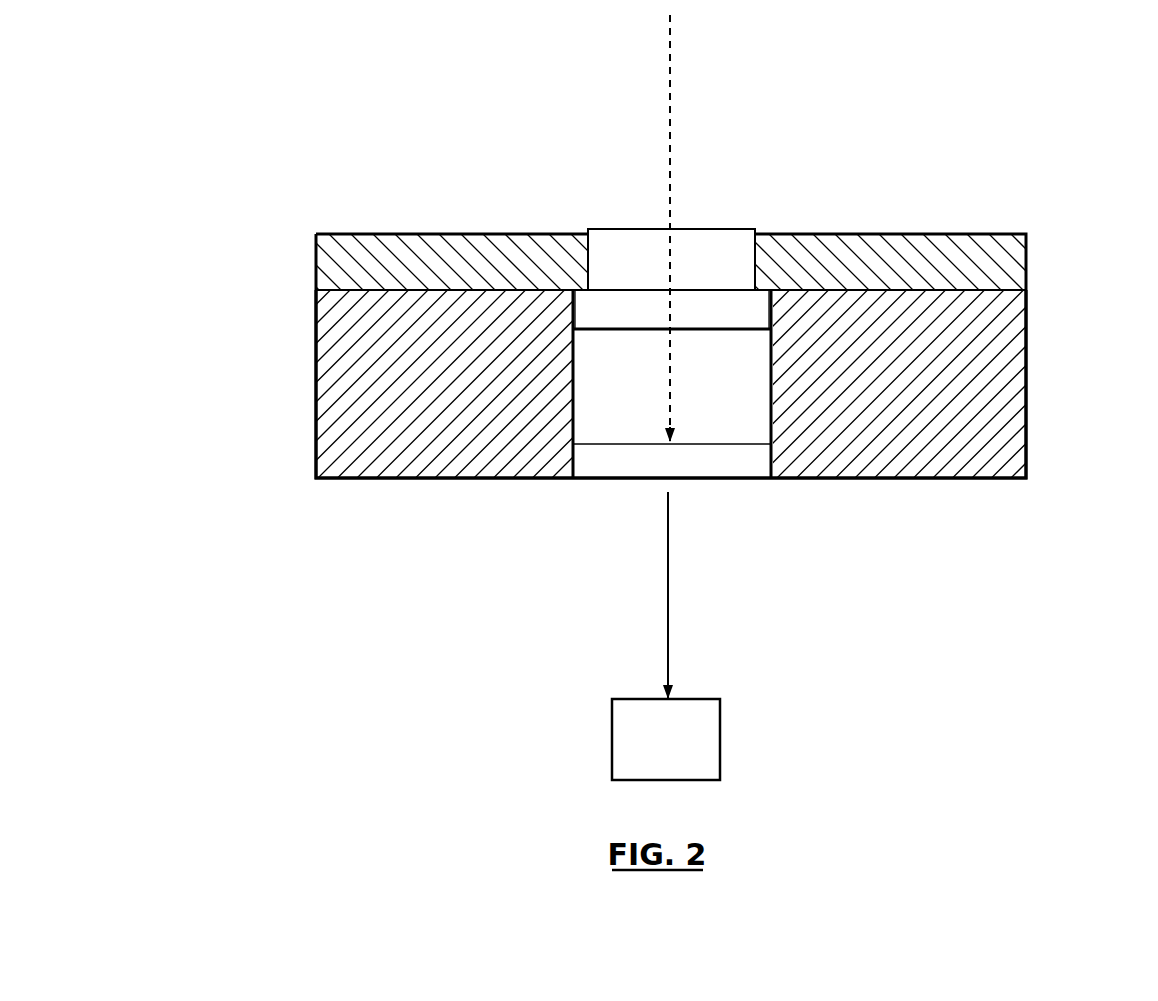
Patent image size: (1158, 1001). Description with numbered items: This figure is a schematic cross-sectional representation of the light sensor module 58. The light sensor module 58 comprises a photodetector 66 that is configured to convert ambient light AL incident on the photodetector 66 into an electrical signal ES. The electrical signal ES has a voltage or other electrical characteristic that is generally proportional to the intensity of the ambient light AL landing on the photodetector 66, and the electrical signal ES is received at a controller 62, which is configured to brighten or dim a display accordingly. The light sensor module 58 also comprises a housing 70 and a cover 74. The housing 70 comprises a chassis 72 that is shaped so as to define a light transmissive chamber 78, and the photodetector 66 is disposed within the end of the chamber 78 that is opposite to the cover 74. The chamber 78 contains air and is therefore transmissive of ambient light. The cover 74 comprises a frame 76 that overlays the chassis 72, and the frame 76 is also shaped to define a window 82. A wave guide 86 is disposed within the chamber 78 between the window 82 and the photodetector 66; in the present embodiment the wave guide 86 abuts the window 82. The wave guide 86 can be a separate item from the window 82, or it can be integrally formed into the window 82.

The light sensor module 58 is at (311, 513).
The controller 62 is at (652, 751).
The photodetector 66 is at (654, 471).
The housing 70 is at (313, 374).
The chassis 72 is at (338, 337).
The cover 74 is at (313, 250).
The frame 76 is at (333, 270).
The light transmissive chamber 78 is at (619, 417).
The window 82 is at (622, 255).
The wave guide 86 is at (717, 305).
The ambient light AL is at (668, 36).
The electrical signal ES is at (663, 632).